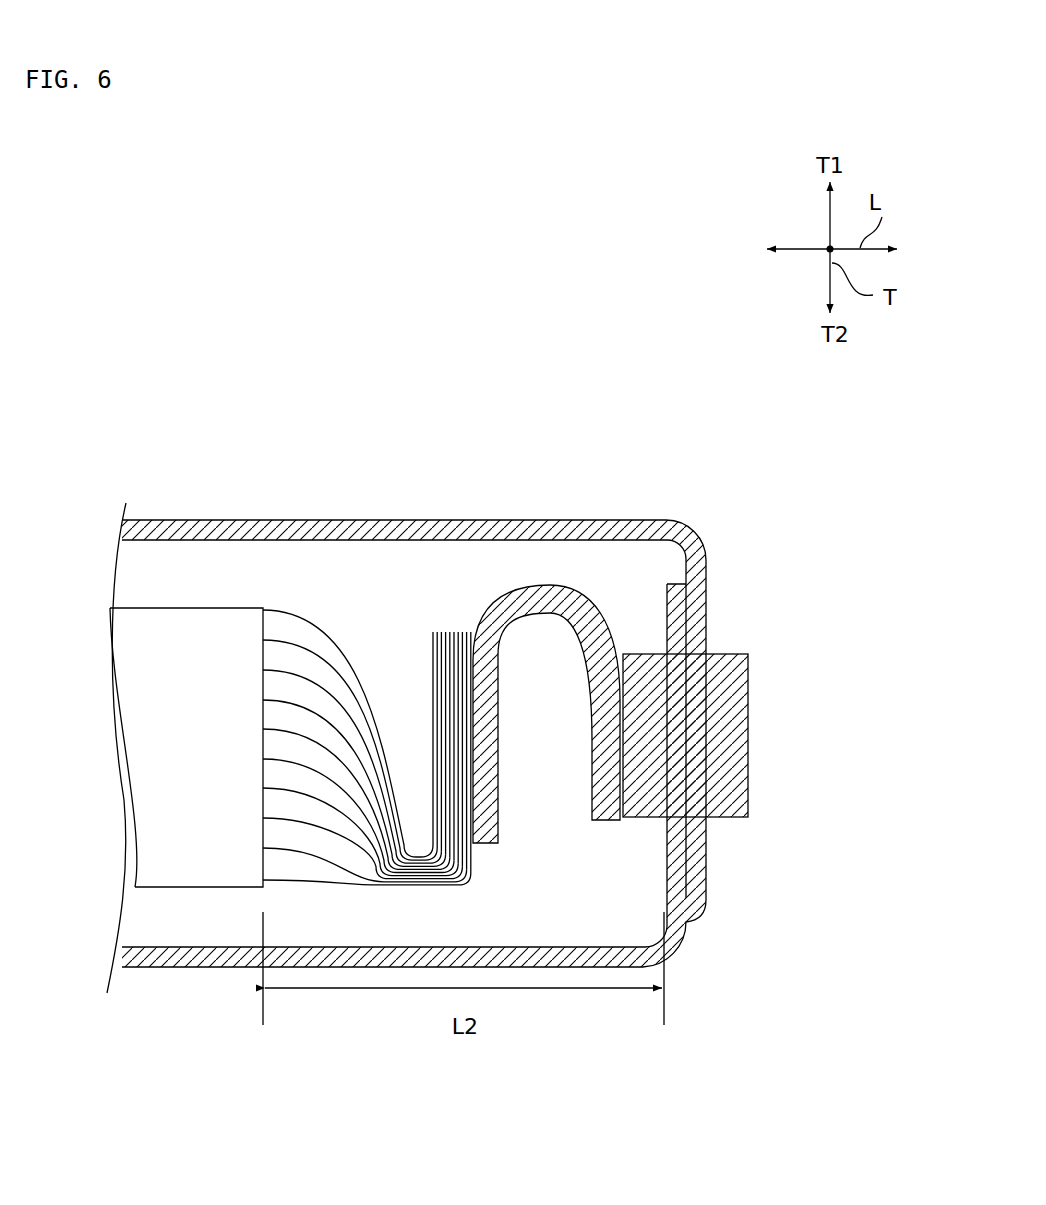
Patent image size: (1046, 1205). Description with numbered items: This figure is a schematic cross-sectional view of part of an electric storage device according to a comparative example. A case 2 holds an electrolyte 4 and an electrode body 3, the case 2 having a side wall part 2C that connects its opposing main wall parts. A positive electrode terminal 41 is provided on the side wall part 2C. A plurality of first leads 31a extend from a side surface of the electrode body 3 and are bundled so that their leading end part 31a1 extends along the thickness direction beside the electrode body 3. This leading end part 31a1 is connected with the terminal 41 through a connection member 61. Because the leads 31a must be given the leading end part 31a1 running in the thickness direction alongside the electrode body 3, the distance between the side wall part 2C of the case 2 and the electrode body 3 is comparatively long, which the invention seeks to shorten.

The case 2 is at (708, 873).
The side wall part 2C is at (706, 566).
The electrode body 3 is at (210, 890).
The electrolyte 4 is at (196, 558).
The first lead 31a is at (294, 604).
The leading end part 31a1 is at (426, 662).
The connection member 61 is at (604, 615).
The positive electrode terminal 41 is at (748, 725).